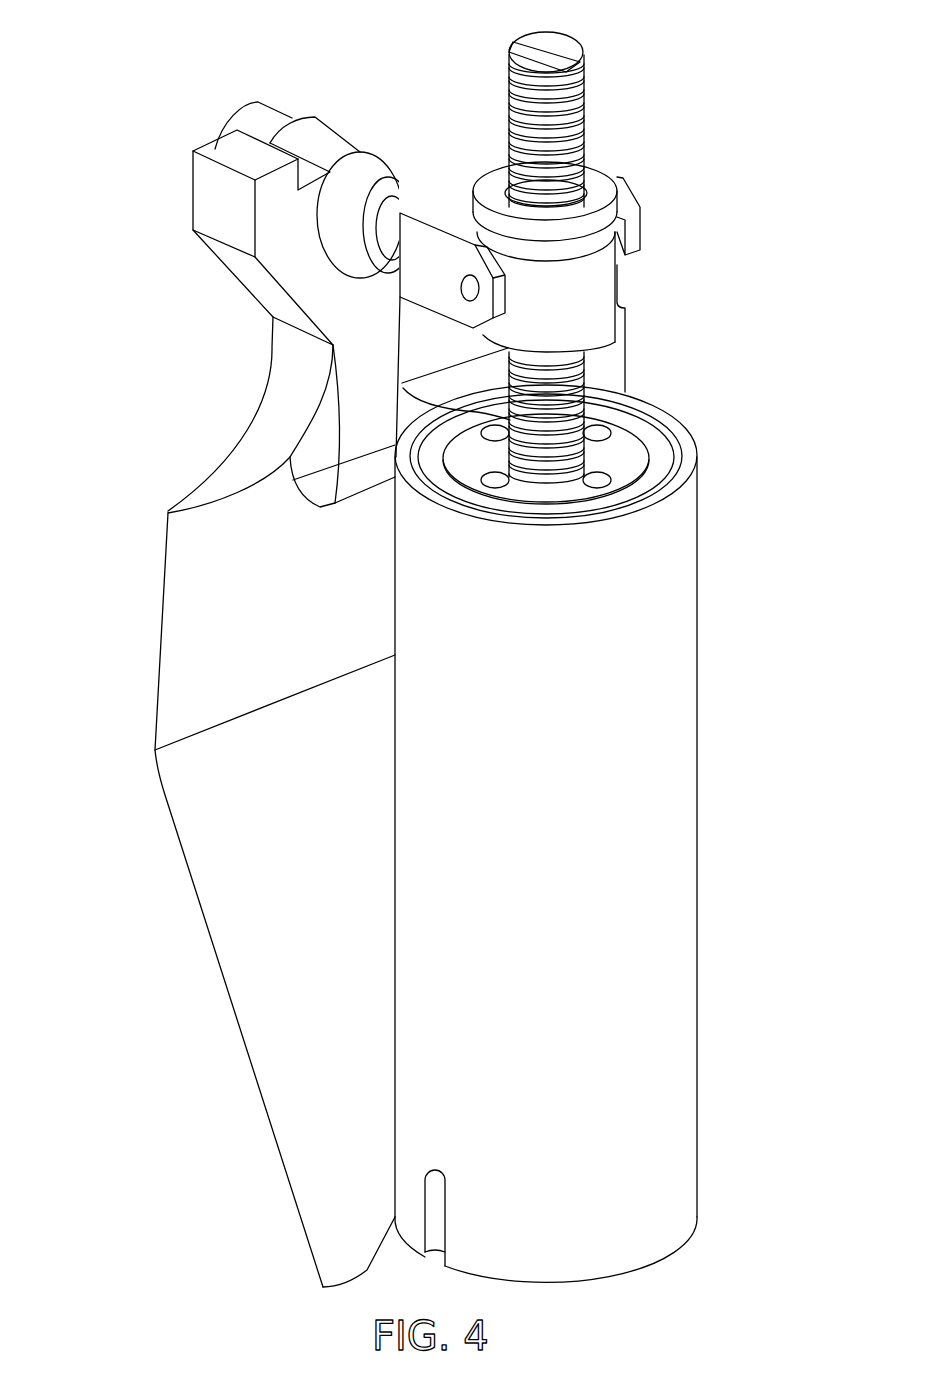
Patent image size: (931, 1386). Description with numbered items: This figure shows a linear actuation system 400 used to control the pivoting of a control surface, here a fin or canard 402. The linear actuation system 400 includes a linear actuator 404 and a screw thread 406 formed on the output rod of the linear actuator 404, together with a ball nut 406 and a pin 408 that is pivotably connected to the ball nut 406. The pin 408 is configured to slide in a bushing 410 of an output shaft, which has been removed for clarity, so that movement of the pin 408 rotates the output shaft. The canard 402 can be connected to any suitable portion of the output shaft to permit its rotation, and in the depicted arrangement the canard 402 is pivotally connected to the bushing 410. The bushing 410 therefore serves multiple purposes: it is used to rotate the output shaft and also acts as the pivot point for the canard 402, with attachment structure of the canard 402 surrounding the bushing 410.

The linear actuation system 400 is at (706, 87).
The canard 402 is at (146, 746).
The linear actuator 404 is at (674, 926).
The screw thread 406 is at (608, 362).
The pin 408 is at (436, 206).
The bushing 410 is at (284, 96).